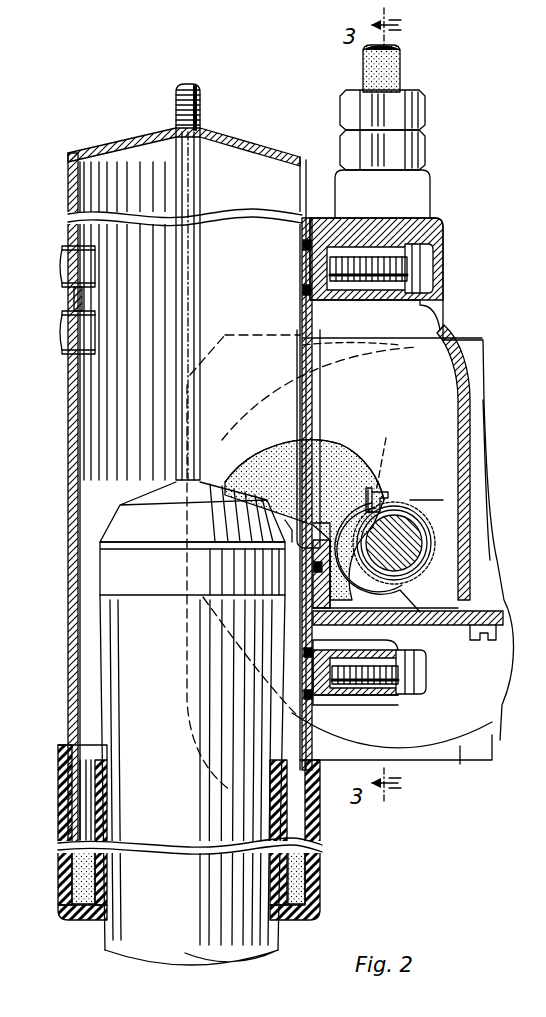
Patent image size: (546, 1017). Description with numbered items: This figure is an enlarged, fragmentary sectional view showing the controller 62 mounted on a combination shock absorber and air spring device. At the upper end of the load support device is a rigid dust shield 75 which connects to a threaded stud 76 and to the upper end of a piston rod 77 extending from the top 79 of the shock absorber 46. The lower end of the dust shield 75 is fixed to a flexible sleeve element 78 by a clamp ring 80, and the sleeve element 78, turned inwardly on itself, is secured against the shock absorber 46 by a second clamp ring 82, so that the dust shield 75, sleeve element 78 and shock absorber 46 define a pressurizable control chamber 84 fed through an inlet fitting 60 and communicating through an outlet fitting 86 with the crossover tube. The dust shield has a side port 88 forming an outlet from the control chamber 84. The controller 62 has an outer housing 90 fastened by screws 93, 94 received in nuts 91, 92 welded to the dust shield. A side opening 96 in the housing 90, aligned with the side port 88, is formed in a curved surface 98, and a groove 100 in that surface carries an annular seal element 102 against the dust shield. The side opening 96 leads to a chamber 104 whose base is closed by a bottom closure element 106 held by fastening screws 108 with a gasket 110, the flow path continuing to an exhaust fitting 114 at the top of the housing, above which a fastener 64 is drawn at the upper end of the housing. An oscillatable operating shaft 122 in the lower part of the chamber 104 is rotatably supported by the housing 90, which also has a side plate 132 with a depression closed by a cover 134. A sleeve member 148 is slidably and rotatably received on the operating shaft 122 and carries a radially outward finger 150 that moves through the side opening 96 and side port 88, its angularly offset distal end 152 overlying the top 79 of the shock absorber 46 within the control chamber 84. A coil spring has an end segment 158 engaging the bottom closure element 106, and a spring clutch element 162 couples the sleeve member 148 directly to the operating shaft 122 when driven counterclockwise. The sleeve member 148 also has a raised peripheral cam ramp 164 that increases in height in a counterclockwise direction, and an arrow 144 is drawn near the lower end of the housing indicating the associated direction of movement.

The shock absorber 46 is at (270, 946).
The inlet fitting 60 is at (84, 331).
The controller 62 is at (458, 306).
The bolt 64 is at (402, 78).
The dust shield 75 is at (250, 147).
The threaded stud 76 is at (202, 100).
The piston rod 77 is at (200, 246).
The flexible sleeve element 78 is at (305, 888).
The top of the shock absorber 79 is at (122, 498).
The clamp ring 80 is at (322, 806).
The clamp ring 82 is at (300, 838).
The control chamber 84 is at (147, 172).
The outlet fitting 86 is at (84, 262).
The side port 88 is at (296, 348).
The outer housing 90 is at (445, 338).
The nut 91 is at (330, 248).
The nut 92 is at (322, 690).
The screw 93 is at (434, 268).
The screw 94 is at (410, 684).
The side opening 96 is at (322, 346).
The curved surface 98 is at (290, 528).
The groove 100 is at (320, 582).
The annular seal element 102 is at (320, 600).
The chamber 104 is at (430, 400).
The bottom closure element 106 is at (418, 626).
The fastening screws 108 is at (490, 640).
The gasket 110 is at (500, 592).
The exhaust fitting 114 is at (420, 156).
The operating shaft 122 is at (412, 533).
The side plate 132 is at (492, 730).
The cover 134 is at (468, 774).
The direction arrow 144 is at (328, 774).
The sleeve member 148 is at (426, 492).
The finger 150 is at (300, 434).
The distal end 152 is at (215, 472).
The end segment 158 is at (396, 557).
The spring clutch element 162 is at (362, 500).
The cam ramp 164 is at (320, 419).